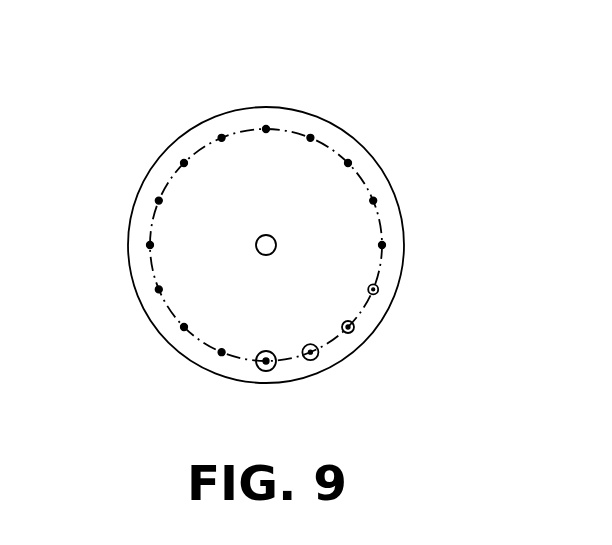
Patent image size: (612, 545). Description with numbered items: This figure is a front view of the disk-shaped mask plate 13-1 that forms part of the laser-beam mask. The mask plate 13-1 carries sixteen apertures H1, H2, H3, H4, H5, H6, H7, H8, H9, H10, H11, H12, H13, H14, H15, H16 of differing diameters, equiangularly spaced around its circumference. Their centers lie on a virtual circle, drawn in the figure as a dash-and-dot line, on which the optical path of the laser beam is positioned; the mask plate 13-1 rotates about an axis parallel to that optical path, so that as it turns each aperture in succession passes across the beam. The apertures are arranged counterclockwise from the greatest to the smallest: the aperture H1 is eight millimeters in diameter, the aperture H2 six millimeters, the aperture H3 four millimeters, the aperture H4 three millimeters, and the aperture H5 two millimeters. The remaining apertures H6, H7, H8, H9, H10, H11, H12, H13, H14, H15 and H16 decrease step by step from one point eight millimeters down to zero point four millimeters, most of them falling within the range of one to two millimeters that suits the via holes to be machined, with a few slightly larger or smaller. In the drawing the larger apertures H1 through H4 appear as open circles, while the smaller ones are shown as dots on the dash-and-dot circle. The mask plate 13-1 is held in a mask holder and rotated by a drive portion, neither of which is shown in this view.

The mask plate 13-1 is at (285, 106).
The aperture H1 is at (266, 361).
The aperture H2 is at (310, 352).
The aperture H3 is at (348, 327).
The aperture H4 is at (373, 289).
The aperture H5 is at (382, 245).
The aperture H6 is at (373, 201).
The aperture H7 is at (348, 163).
The aperture H8 is at (310, 138).
The aperture H9 is at (266, 129).
The aperture H10 is at (222, 138).
The aperture H11 is at (184, 163).
The aperture H12 is at (159, 201).
The aperture H13 is at (150, 245).
The aperture H14 is at (159, 289).
The aperture H15 is at (184, 327).
The aperture H16 is at (222, 352).